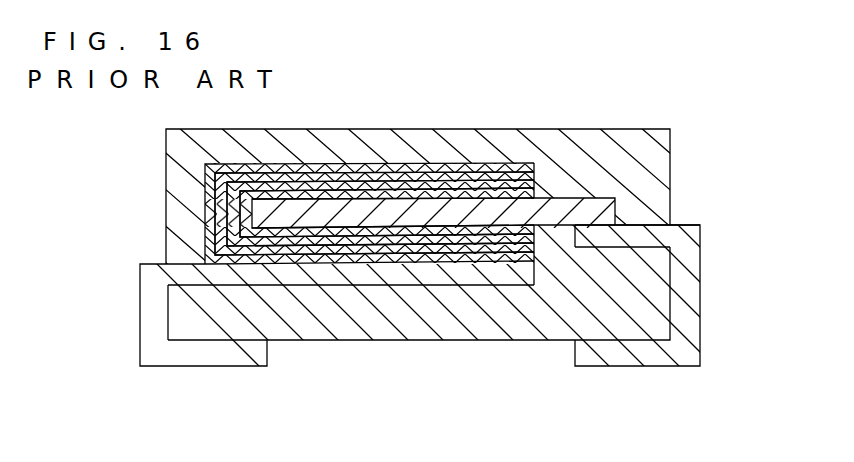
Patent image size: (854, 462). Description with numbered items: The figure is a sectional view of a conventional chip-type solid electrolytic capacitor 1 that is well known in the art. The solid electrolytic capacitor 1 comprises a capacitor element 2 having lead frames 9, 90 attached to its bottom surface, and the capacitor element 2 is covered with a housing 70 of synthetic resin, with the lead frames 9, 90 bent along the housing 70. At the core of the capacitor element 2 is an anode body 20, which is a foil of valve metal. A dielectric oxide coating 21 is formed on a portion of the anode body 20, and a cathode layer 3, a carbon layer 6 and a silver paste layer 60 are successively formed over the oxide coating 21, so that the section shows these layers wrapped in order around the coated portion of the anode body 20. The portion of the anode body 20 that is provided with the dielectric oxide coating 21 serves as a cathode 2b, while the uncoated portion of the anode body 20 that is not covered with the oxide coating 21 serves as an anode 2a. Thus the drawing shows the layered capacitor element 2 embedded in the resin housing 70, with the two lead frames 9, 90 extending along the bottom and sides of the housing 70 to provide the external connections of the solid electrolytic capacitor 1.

The solid electrolytic capacitor 1 is at (691, 106).
The capacitor element 2 is at (593, 63).
The anode 2a is at (587, 240).
The cathode 2b is at (397, 264).
The cathode layer 3 is at (457, 185).
The carbon layer 6 is at (407, 175).
The lead frame 9 is at (632, 353).
The anode body 20 is at (555, 208).
The dielectric oxide coating 21 is at (500, 190).
The silver paste layer 60 is at (342, 167).
The housing 70 is at (658, 167).
The lead frame 90 is at (215, 357).